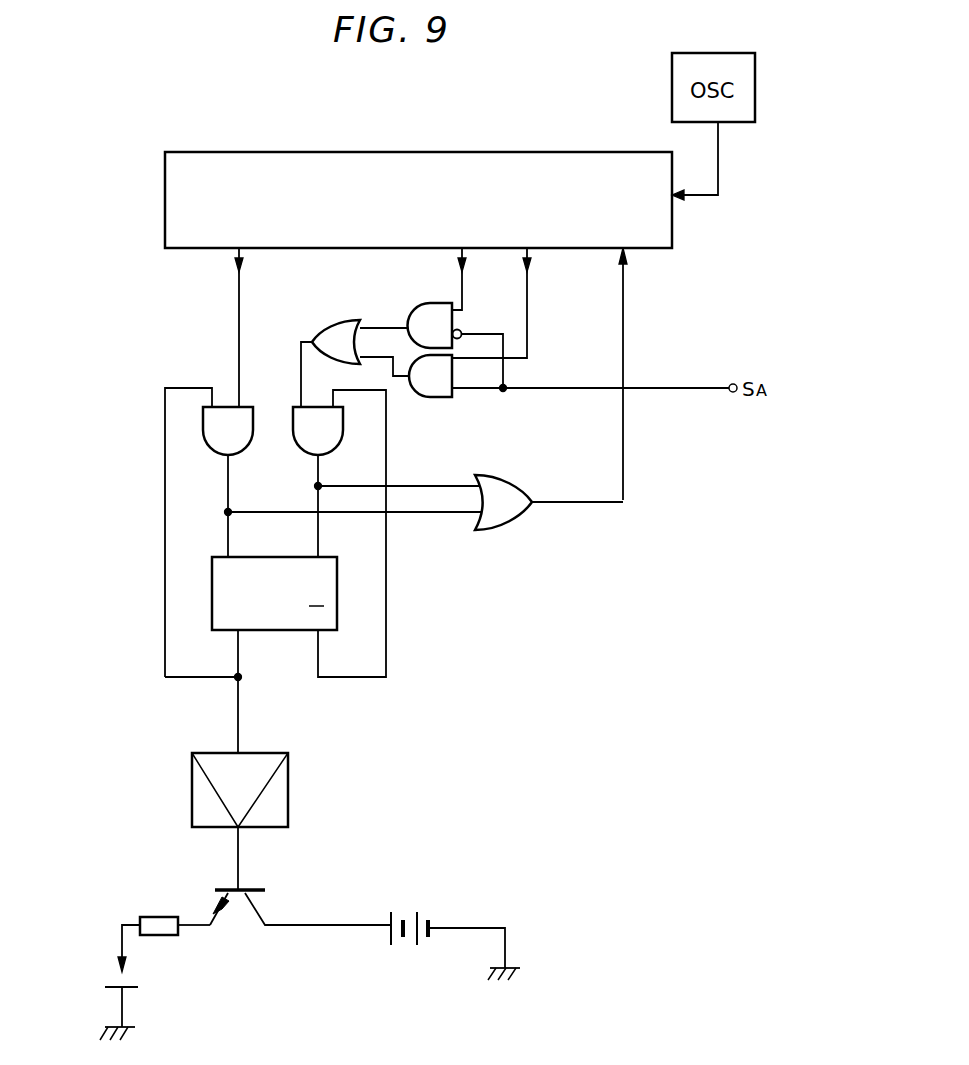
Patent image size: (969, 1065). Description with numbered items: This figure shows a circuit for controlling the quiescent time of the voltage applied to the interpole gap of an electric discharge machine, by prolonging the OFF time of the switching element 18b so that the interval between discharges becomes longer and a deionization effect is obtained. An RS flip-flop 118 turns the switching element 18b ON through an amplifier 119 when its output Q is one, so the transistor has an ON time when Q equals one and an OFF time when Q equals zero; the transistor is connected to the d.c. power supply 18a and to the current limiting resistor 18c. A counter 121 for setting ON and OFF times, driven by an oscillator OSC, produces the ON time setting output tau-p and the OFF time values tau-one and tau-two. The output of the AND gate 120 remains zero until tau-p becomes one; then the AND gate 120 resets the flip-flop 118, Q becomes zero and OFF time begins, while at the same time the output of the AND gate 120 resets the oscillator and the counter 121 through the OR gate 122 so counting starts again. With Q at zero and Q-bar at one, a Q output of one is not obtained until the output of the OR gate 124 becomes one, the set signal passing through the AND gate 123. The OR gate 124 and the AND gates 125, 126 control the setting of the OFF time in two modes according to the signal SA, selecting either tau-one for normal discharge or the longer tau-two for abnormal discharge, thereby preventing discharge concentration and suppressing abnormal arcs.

The counter 121 is at (435, 152).
The AND gate 126 is at (416, 303).
The OR gate 124 is at (326, 322).
The AND gate 125 is at (428, 397).
The AND gate 120 is at (252, 440).
The AND gate 123 is at (343, 437).
The OR gate 122 is at (528, 513).
The RS flip-flop 118 is at (337, 584).
The amplifier 119 is at (288, 801).
The d.c. power supply 18a is at (410, 946).
The switching element 18b is at (240, 912).
The current limiting resistor 18c is at (160, 935).